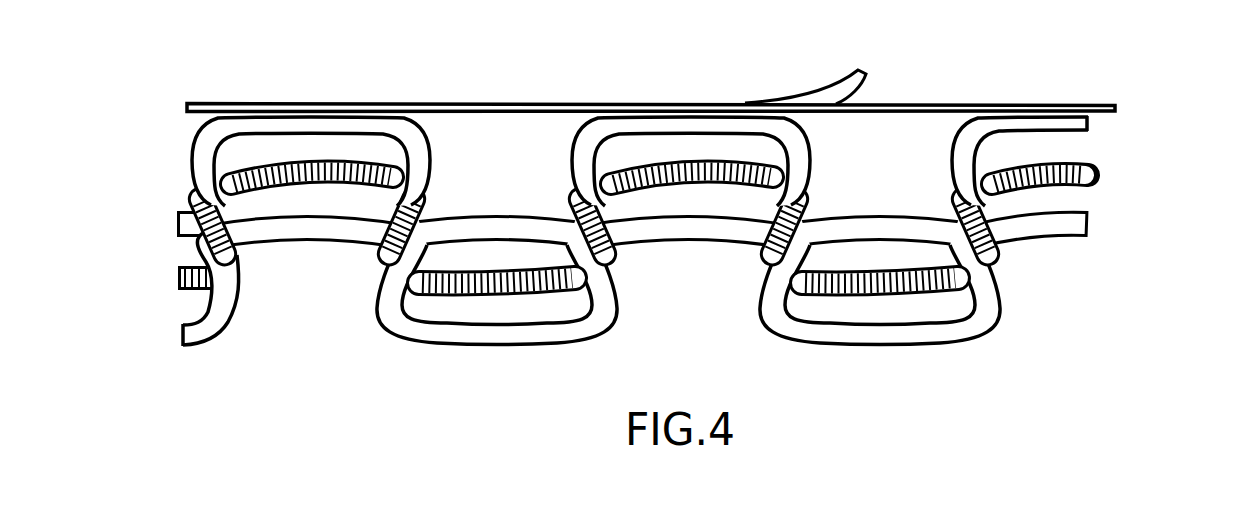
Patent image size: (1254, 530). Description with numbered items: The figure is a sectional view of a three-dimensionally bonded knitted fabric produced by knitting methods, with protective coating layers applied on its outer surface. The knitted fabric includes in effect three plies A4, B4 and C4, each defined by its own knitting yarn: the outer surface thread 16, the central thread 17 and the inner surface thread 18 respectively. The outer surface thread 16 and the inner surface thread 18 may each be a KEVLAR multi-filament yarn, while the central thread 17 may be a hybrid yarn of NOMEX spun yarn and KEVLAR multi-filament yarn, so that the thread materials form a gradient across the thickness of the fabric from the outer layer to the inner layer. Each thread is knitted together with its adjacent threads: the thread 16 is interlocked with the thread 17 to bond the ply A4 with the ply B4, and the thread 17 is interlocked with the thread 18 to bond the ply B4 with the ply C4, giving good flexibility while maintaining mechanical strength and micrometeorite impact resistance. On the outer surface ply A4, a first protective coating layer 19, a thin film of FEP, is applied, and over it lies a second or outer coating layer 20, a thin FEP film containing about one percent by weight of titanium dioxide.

The outer surface thread 16 is at (200, 148).
The central thread 17 is at (192, 201).
The inner surface thread 18 is at (200, 258).
The first protective coating layer 19 is at (998, 106).
The second or outer coating layer 20 is at (867, 84).
The outer surface ply A4 is at (1117, 120).
The central ply B4 is at (1117, 173).
The inner surface ply C4 is at (1117, 223).